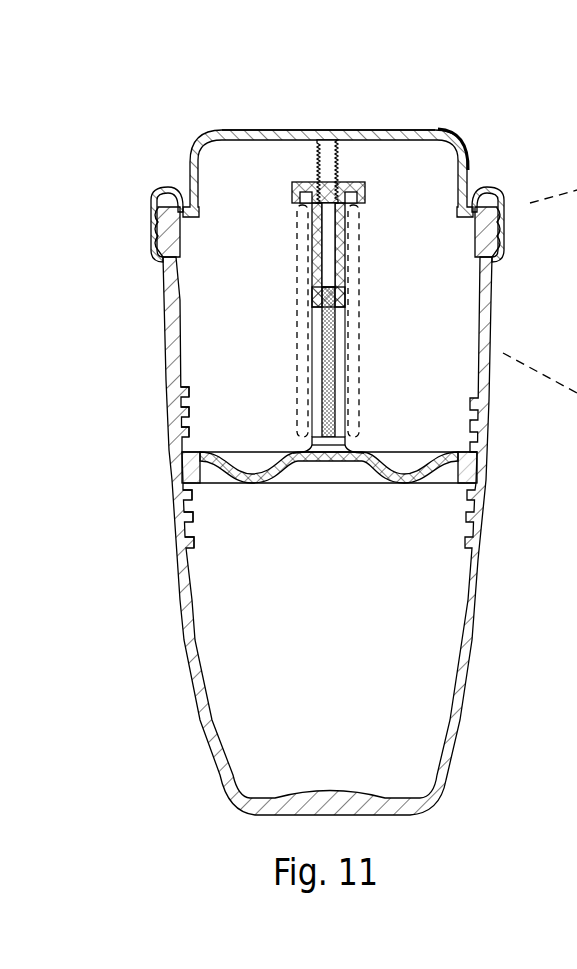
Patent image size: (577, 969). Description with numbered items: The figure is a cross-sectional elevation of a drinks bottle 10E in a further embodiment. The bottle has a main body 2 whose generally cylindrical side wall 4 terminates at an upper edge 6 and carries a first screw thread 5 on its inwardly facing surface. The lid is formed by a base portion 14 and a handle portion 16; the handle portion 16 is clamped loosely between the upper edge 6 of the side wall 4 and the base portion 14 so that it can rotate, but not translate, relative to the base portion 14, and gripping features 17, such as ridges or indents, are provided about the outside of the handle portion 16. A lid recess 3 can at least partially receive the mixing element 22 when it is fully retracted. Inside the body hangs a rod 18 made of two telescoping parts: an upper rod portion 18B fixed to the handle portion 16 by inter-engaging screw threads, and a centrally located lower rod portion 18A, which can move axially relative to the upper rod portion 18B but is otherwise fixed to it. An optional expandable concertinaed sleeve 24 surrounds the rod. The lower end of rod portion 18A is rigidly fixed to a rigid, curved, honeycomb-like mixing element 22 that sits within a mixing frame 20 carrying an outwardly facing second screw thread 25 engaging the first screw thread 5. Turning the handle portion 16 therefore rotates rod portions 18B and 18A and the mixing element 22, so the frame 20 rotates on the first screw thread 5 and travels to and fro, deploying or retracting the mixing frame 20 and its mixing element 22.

The main body 2 is at (152, 355).
The opening or recess 3 is at (256, 150).
The side wall 4 is at (168, 310).
The first screw thread 5 is at (187, 503).
The upper edge 6 is at (161, 221).
The drinks bottle 10E is at (485, 122).
The base portion 14 is at (158, 205).
The handle portion 16 is at (397, 128).
The gripping features 17 is at (462, 157).
The rod 18 is at (490, 299).
The rod portion 18A is at (337, 355).
The upper rod portion 18B is at (345, 253).
The mixing frame 20 is at (478, 452).
The mixing element 22 is at (390, 477).
The expandable concertinaed sleeve 24 is at (296, 328).
The second screw thread 25 is at (183, 463).